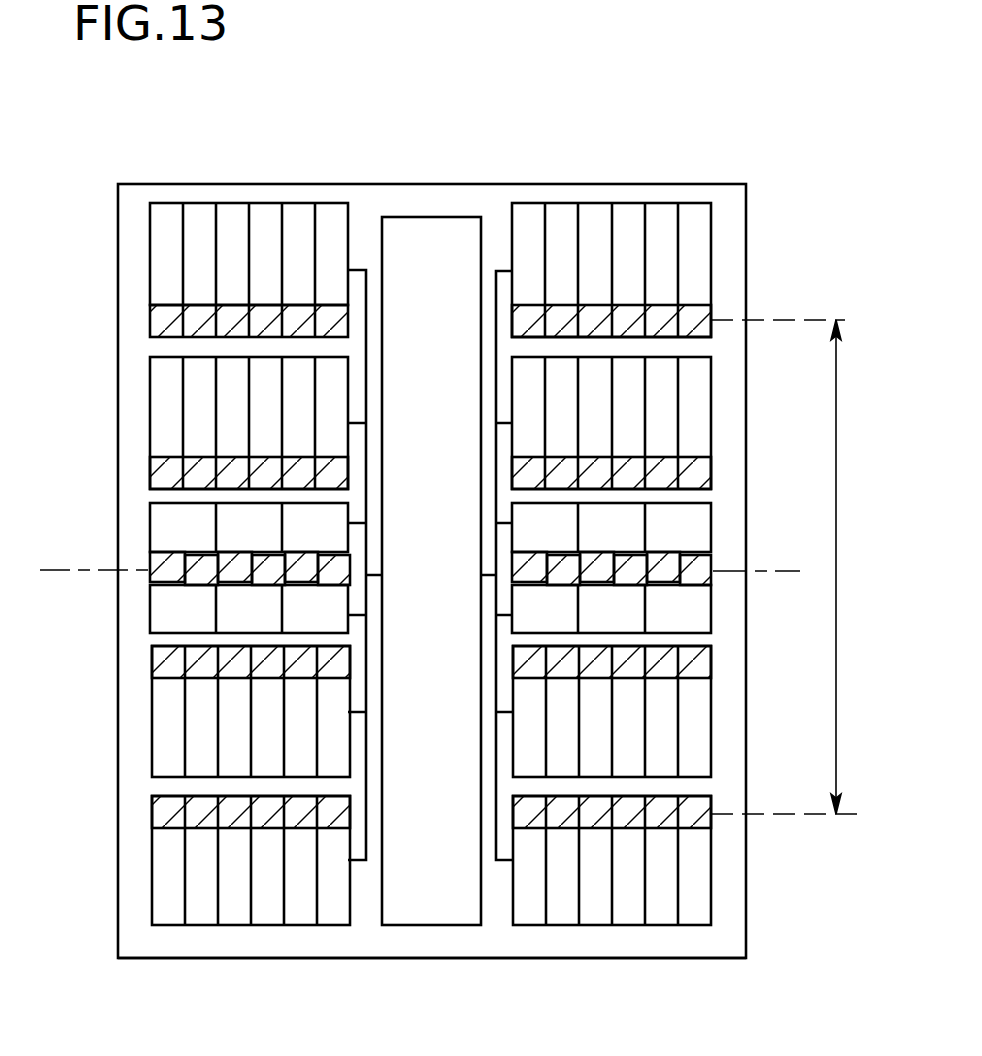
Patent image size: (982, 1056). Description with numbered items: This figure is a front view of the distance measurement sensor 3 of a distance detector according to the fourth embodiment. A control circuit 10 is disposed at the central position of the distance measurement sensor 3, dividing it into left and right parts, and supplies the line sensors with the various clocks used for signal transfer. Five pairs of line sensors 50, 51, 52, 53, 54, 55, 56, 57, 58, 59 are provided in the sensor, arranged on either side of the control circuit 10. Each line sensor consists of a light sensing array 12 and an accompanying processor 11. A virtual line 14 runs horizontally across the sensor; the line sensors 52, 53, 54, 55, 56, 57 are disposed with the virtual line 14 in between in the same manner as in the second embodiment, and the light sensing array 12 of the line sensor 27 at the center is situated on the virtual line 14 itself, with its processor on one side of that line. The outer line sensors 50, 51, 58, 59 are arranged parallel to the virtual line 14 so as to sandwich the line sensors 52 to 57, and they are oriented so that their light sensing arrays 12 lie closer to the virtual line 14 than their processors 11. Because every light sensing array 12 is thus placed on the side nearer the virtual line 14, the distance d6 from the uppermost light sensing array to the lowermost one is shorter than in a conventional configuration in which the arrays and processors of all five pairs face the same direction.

The distance measurement sensor 3 is at (455, 203).
The control circuit 10 is at (435, 927).
The processor 11 is at (150, 253).
The light sensing array 12 is at (150, 325).
The virtual line 14 is at (45, 568).
The line sensor 27 is at (697, 517).
The line sensor 50 is at (199, 351).
The line sensor 51 is at (618, 203).
The line sensor 52 is at (150, 403).
The line sensor 53 is at (711, 408).
The line sensor 54 is at (150, 615).
The line sensor 55 is at (711, 614).
The line sensor 56 is at (152, 740).
The line sensor 57 is at (711, 718).
The line sensor 58 is at (238, 925).
The line sensor 59 is at (637, 927).
The distance d6 is at (796, 567).